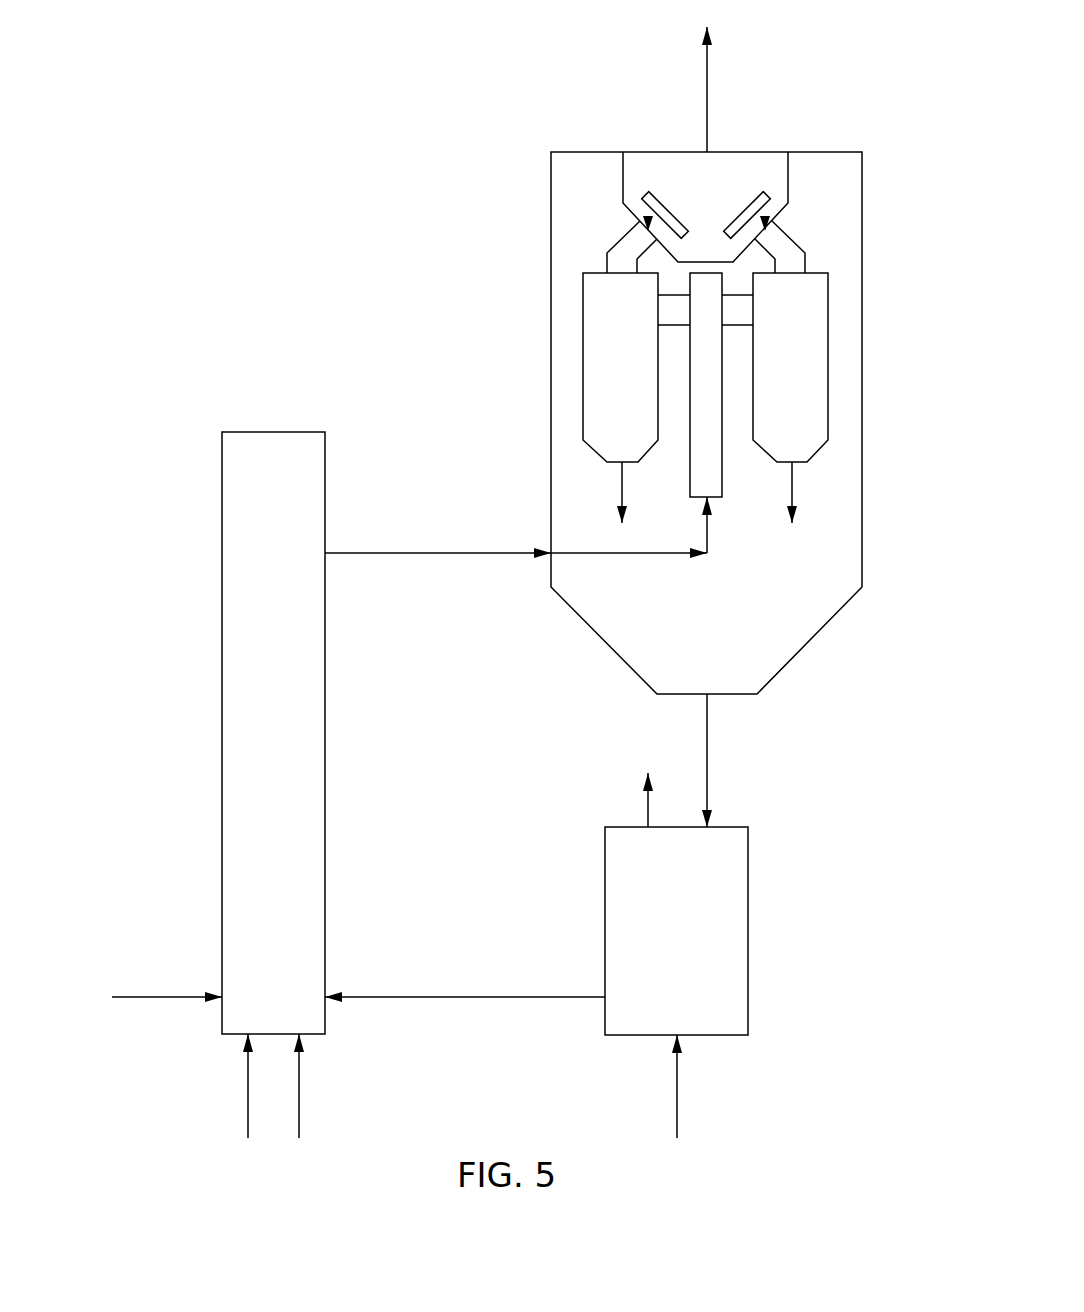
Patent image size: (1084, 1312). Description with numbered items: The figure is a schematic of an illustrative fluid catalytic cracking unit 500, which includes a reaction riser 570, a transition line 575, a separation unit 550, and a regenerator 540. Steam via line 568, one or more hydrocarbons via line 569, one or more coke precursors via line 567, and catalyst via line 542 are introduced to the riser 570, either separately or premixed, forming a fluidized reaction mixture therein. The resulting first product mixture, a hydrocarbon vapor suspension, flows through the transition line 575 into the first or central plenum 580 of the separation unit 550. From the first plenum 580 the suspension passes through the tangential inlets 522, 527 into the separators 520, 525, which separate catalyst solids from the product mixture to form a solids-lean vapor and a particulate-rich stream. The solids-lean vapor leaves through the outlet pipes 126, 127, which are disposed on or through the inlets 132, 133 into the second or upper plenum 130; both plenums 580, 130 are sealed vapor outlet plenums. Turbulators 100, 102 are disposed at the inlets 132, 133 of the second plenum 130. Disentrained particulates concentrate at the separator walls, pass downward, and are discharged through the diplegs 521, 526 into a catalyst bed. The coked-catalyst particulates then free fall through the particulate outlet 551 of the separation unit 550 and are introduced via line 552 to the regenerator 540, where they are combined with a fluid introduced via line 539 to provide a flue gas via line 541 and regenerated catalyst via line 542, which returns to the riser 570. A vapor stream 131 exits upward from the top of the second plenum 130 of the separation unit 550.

The fluid catalytic cracking unit 500 is at (314, 164).
The gas outlet stream 131 is at (707, 65).
The inlet 132 is at (648, 216).
The turbulator 100 is at (657, 193).
The turbulator 102 is at (753, 197).
The inlet 133 is at (765, 216).
The second plenum 130 is at (690, 196).
The outlet pipe 126 is at (612, 252).
The outlet pipe 127 is at (798, 252).
The separation unit 550 is at (551, 228).
The inlet 522 is at (672, 310).
The inlet 527 is at (742, 310).
The separator 520 is at (605, 378).
The separator 525 is at (774, 378).
The dipleg 521 is at (620, 482).
The dipleg 526 is at (792, 482).
The first plenum 580 is at (722, 470).
The transition line 575 is at (438, 553).
The riser 570 is at (254, 748).
The particulate outlet 551 is at (733, 695).
The line 552 is at (707, 773).
The line 541 is at (648, 805).
The regenerator 540 is at (657, 938).
The line 569 is at (145, 997).
The line 542 is at (448, 997).
The line 568 is at (248, 1103).
The line 567 is at (299, 1103).
The line 539 is at (677, 1100).